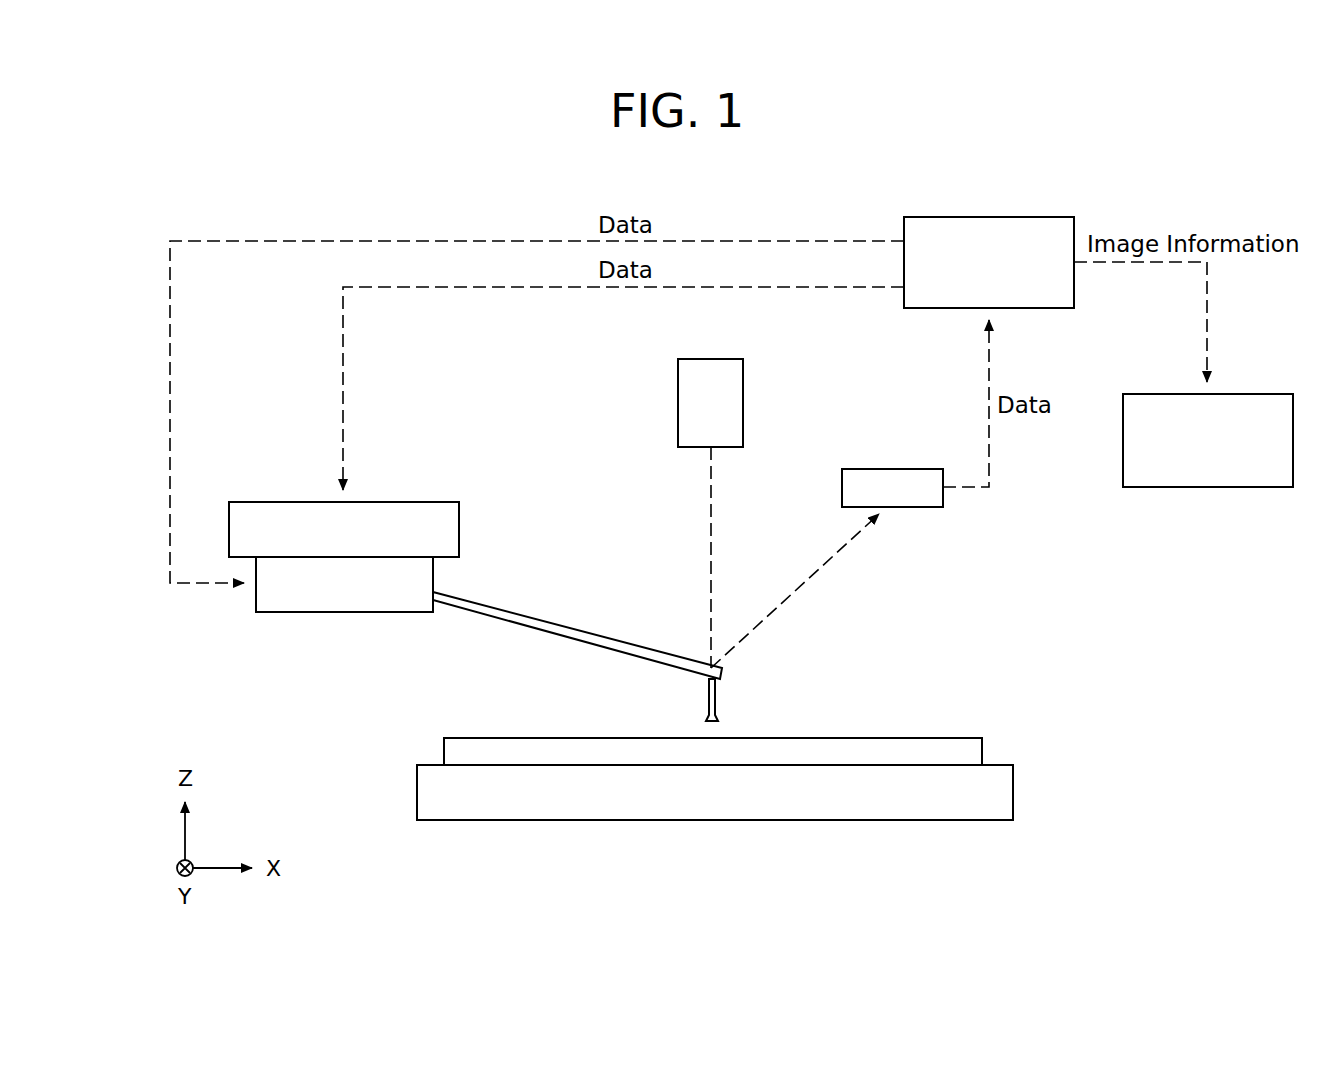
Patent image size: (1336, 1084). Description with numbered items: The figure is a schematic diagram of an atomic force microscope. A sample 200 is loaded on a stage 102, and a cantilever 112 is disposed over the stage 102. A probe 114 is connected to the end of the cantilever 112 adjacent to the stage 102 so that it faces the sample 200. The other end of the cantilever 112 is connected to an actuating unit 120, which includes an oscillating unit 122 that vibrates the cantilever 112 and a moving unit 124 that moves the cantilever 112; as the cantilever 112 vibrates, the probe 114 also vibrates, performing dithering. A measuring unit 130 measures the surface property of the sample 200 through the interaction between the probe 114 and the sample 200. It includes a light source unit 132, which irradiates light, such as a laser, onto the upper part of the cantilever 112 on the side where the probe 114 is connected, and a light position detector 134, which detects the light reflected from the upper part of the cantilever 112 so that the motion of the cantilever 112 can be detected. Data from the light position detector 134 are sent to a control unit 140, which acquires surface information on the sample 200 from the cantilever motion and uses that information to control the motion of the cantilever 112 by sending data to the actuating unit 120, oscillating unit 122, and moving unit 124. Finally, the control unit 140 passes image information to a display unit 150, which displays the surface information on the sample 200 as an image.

The stage 102 is at (1003, 792).
The sample 200 is at (972, 750).
The cantilever 112 is at (633, 643).
The probe 114 is at (716, 695).
The actuating unit 120 is at (420, 557).
The oscillating unit 122 is at (433, 577).
The moving unit 124 is at (459, 527).
The measuring unit 130 is at (810, 427).
The light source unit 132 is at (743, 402).
The light position detector 134 is at (891, 469).
The control unit 140 is at (1025, 217).
The display unit 150 is at (1250, 394).